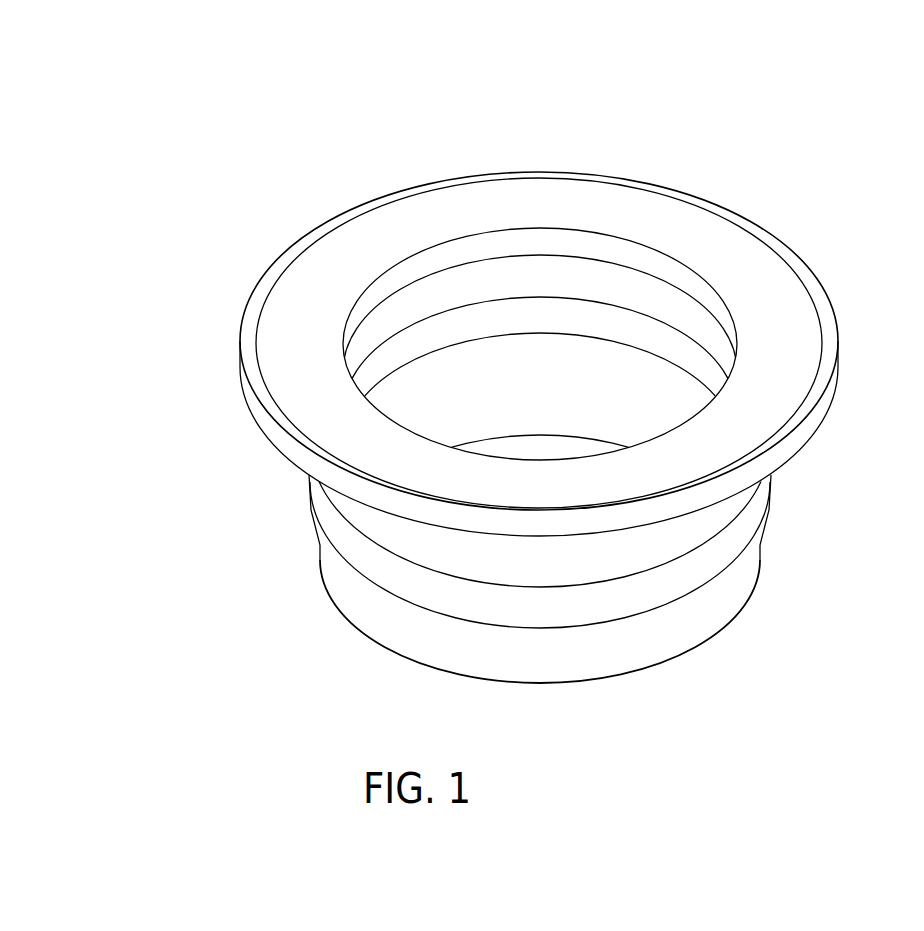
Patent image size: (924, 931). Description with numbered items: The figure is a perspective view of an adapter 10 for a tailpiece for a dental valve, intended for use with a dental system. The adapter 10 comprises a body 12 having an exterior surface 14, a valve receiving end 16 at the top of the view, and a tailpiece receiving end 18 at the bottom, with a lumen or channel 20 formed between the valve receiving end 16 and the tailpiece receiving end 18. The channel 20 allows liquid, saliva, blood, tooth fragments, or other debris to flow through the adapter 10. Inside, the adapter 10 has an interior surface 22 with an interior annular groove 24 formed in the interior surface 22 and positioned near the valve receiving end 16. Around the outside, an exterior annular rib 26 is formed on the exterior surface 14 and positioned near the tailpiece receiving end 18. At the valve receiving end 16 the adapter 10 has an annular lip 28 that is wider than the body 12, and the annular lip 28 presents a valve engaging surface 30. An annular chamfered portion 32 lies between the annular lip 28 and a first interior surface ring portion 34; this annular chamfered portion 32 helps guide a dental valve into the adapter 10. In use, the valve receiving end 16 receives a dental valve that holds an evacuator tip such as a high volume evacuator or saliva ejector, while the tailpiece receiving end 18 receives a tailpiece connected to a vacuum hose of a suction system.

The adapter 10 is at (601, 118).
The body 12 is at (805, 509).
The exterior surface 14 is at (733, 590).
The valve receiving end 16 is at (787, 183).
The tailpiece receiving end 18 is at (681, 683).
The channel 20 is at (453, 379).
The interior surface 22 is at (630, 397).
The interior annular groove 24 is at (535, 318).
The exterior annular rib 26 is at (320, 502).
The annular lip 28 is at (855, 386).
The valve engaging surface 30 is at (308, 296).
The annular chamfered portion 32 is at (485, 250).
The first interior surface ring portion 34 is at (632, 292).